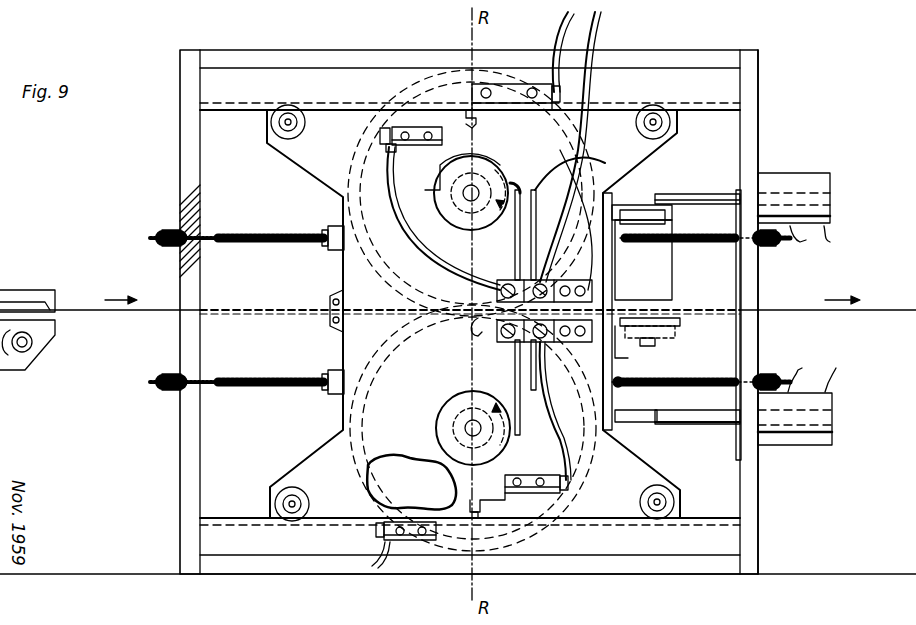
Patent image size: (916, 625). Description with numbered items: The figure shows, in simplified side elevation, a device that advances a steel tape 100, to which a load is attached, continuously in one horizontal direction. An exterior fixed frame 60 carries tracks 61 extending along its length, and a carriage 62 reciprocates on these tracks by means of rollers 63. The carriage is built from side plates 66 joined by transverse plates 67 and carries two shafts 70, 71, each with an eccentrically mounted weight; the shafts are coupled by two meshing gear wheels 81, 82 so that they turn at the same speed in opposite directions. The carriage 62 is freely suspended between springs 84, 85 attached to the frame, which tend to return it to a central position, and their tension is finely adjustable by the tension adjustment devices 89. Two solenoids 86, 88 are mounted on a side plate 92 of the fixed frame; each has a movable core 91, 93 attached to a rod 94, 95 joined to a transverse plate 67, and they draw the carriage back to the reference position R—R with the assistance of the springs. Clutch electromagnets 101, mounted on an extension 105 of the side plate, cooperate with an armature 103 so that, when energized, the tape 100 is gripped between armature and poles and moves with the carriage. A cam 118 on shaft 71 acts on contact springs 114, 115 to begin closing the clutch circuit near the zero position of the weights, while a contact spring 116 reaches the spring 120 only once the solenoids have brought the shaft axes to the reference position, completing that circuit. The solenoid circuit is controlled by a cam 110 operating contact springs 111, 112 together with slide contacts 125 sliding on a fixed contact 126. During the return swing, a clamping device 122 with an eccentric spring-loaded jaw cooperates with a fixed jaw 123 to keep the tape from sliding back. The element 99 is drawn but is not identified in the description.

The exterior fixed frame 60 is at (665, 560).
The tracks 61 is at (705, 518).
The carriage 62 is at (300, 449).
The rollers 63 is at (672, 492).
The side plates 66 is at (618, 446).
The transverse plates 67 is at (612, 368).
The shaft 70 is at (466, 428).
The shaft 71 is at (471, 195).
The gear wheel 81 is at (385, 143).
The gear wheel 82 is at (358, 460).
The spring 84 is at (258, 234).
The spring 85 is at (703, 242).
The solenoid 86 is at (820, 435).
The solenoid 88 is at (820, 183).
The tension adjustment devices 89 is at (163, 232).
The movable core 91 is at (700, 425).
The side plate 92 is at (760, 290).
The movable core 93 is at (684, 194).
The rod 94 is at (640, 416).
The rod 95 is at (634, 210).
The hook 99 is at (476, 512).
The steel tape 100 is at (268, 310).
The clutch electromagnets 101 is at (672, 290).
The armature 103 is at (676, 322).
The extension 105 is at (668, 332).
The cam 110 is at (458, 404).
The contact spring 111 is at (517, 436).
The contact spring 112 is at (540, 400).
The contact spring 114 is at (516, 190).
The contact spring 115 is at (575, 160).
The contact spring 116 is at (470, 124).
The cam 118 is at (462, 222).
The spring 120 is at (493, 100).
The clamping device 122 is at (40, 334).
The fixed jaw 123 is at (58, 305).
The slide contacts 125 is at (508, 500).
The fixed contact 126 is at (390, 520).